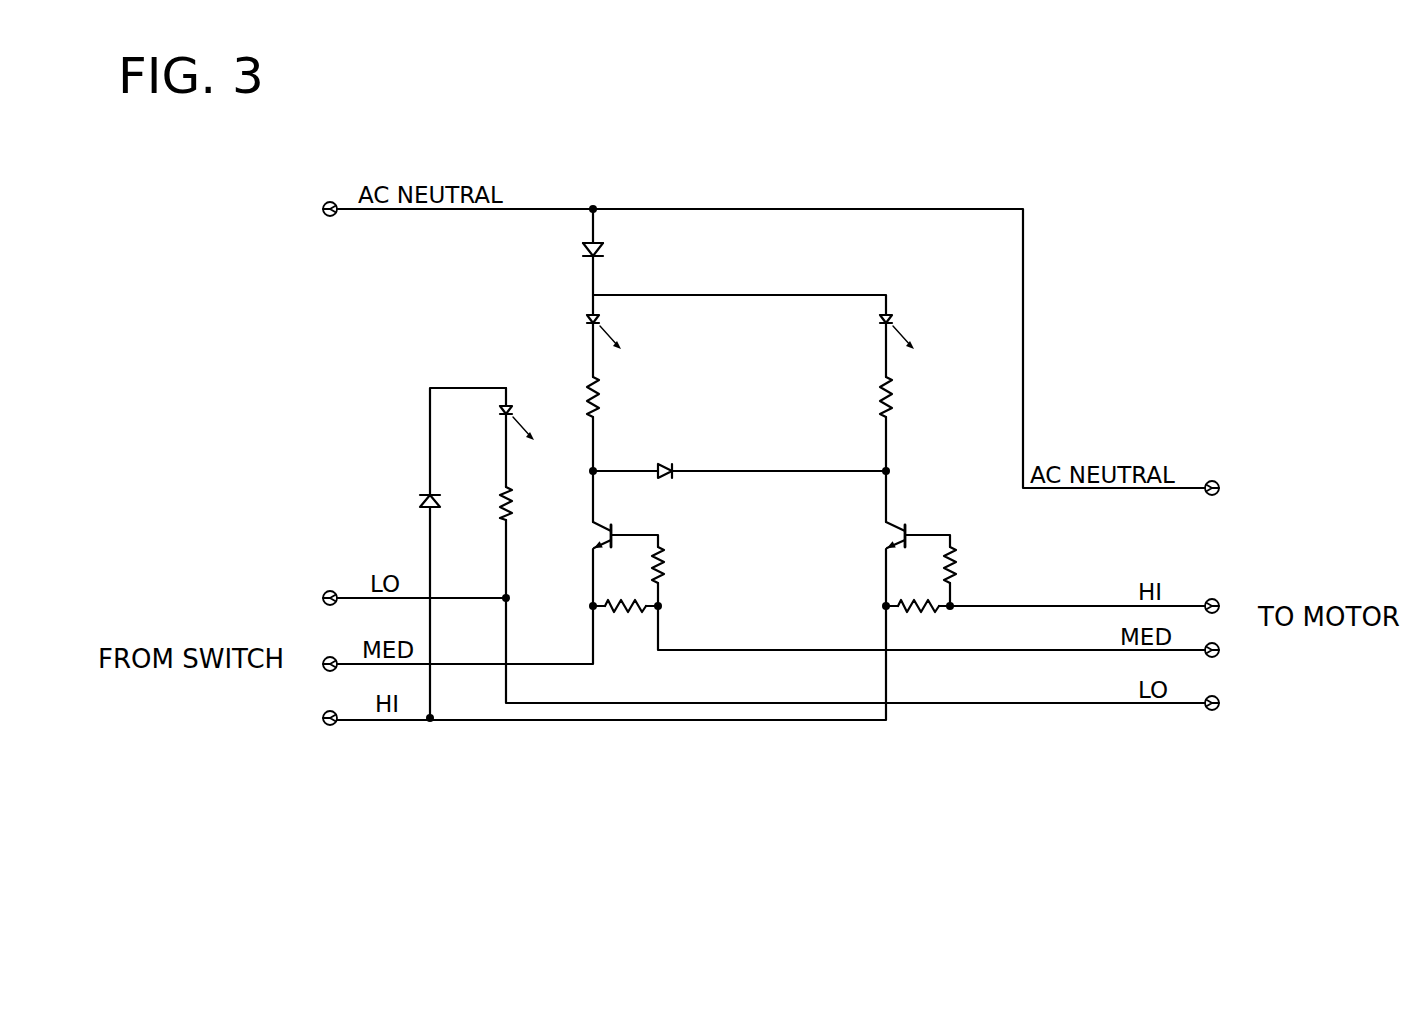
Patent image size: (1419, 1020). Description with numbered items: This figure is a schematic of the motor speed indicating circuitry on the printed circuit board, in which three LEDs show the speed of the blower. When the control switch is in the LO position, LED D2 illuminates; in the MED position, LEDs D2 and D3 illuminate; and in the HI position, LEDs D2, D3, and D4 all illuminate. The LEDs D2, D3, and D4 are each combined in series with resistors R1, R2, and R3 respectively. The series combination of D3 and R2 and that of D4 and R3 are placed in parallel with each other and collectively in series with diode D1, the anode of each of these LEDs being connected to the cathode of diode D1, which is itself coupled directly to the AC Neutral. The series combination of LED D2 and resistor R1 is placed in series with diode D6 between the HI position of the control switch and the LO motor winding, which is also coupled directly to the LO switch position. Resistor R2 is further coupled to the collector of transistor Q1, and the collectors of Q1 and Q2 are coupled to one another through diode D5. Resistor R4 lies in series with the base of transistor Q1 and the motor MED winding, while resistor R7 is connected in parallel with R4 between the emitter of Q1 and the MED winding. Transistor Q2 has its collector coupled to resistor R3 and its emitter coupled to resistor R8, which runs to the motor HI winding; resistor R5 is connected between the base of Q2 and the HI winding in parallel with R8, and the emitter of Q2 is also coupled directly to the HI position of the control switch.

The diode D1 is at (615, 254).
The LED D2 is at (527, 421).
The LED D3 is at (618, 329).
The LED D4 is at (908, 329).
The diode D5 is at (671, 457).
The diode D6 is at (409, 500).
The resistor R1 is at (527, 503).
The resistor R2 is at (617, 397).
The resistor R3 is at (908, 397).
The resistor R4 is at (677, 566).
The resistor R5 is at (969, 565).
The resistor R7 is at (625, 594).
The resistor R8 is at (918, 594).
The transistor Q1 is at (584, 536).
The transistor Q2 is at (876, 536).